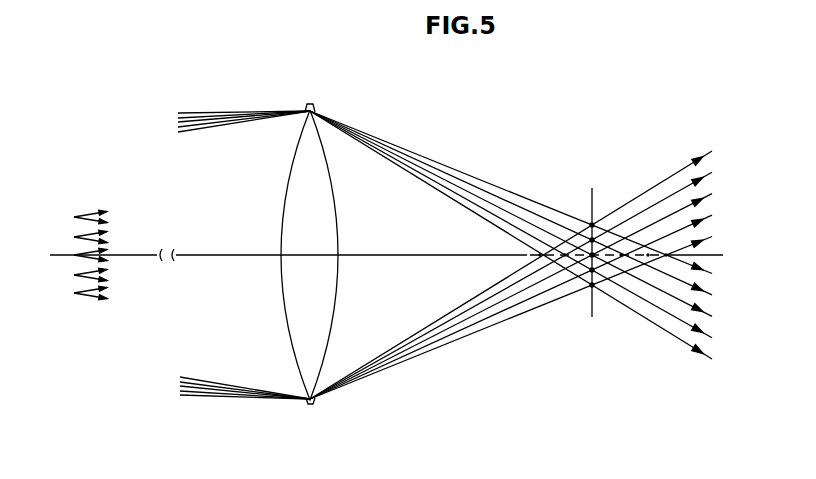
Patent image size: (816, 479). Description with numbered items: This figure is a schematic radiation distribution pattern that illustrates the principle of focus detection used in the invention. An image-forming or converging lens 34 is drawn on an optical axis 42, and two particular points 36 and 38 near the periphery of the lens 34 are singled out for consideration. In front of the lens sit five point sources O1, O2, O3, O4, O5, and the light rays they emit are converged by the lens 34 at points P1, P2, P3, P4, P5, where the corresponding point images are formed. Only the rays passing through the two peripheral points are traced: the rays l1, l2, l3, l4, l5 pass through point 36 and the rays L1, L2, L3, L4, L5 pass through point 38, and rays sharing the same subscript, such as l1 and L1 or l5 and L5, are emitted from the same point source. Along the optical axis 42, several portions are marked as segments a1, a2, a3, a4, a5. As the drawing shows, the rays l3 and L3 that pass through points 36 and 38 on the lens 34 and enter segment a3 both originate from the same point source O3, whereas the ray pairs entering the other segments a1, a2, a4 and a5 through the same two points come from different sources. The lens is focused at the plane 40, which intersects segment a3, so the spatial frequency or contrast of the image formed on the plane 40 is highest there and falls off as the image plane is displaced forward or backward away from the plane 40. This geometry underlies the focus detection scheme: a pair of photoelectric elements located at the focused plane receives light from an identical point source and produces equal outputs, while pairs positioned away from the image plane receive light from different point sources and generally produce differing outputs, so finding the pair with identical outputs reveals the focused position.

The image-forming or converging lens 34 is at (283, 300).
The particular point near lens periphery 36 is at (313, 403).
The particular point near lens periphery 38 is at (315, 110).
The plane 40 is at (592, 318).
The optical axis 42 is at (400, 257).
The point source O1 is at (74, 295).
The point source O2 is at (74, 277).
The point source O3 is at (74, 256).
The point source O4 is at (74, 237).
The point source O5 is at (75, 216).
The convergence point P1 is at (591, 224).
The convergence point P2 is at (593, 239).
The convergence point P3 is at (594, 254).
The convergence point P4 is at (591, 271).
The convergence point P5 is at (594, 287).
The segment on optical axis a1 is at (538, 258).
The segment on optical axis a2 is at (563, 258).
The segment on optical axis a3 is at (620, 258).
The segment on optical axis a4 is at (648, 258).
The segment on optical axis a5 is at (665, 258).
The light ray l1 is at (712, 151).
The light ray l2 is at (712, 172).
The light ray l3 is at (712, 194).
The light ray l4 is at (712, 215).
The light ray l5 is at (712, 236).
The light ray L1 is at (712, 274).
The light ray L2 is at (712, 295).
The light ray L3 is at (712, 316).
The light ray L4 is at (712, 338).
The light ray L5 is at (712, 359).